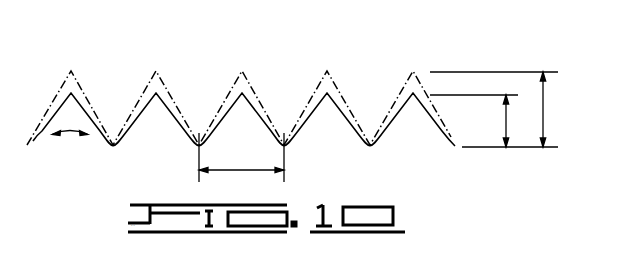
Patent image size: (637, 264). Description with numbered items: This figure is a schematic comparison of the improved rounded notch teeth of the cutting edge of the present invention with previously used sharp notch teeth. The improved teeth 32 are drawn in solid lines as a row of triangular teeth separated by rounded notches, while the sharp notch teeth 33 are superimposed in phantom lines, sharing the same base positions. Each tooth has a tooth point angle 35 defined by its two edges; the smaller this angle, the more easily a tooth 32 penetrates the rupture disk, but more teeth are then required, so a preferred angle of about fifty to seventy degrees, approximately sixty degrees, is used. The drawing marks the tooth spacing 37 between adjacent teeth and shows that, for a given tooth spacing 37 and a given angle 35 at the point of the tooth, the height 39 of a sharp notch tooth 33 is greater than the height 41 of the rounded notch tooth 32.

The tooth 32 is at (261, 100).
The sharp notch tooth 33 is at (340, 90).
The tooth point angle 35 is at (70, 133).
The tooth spacing 37 is at (248, 170).
The height of sharp notch tooth 39 is at (543, 113).
The height of rounded notch tooth 41 is at (506, 128).